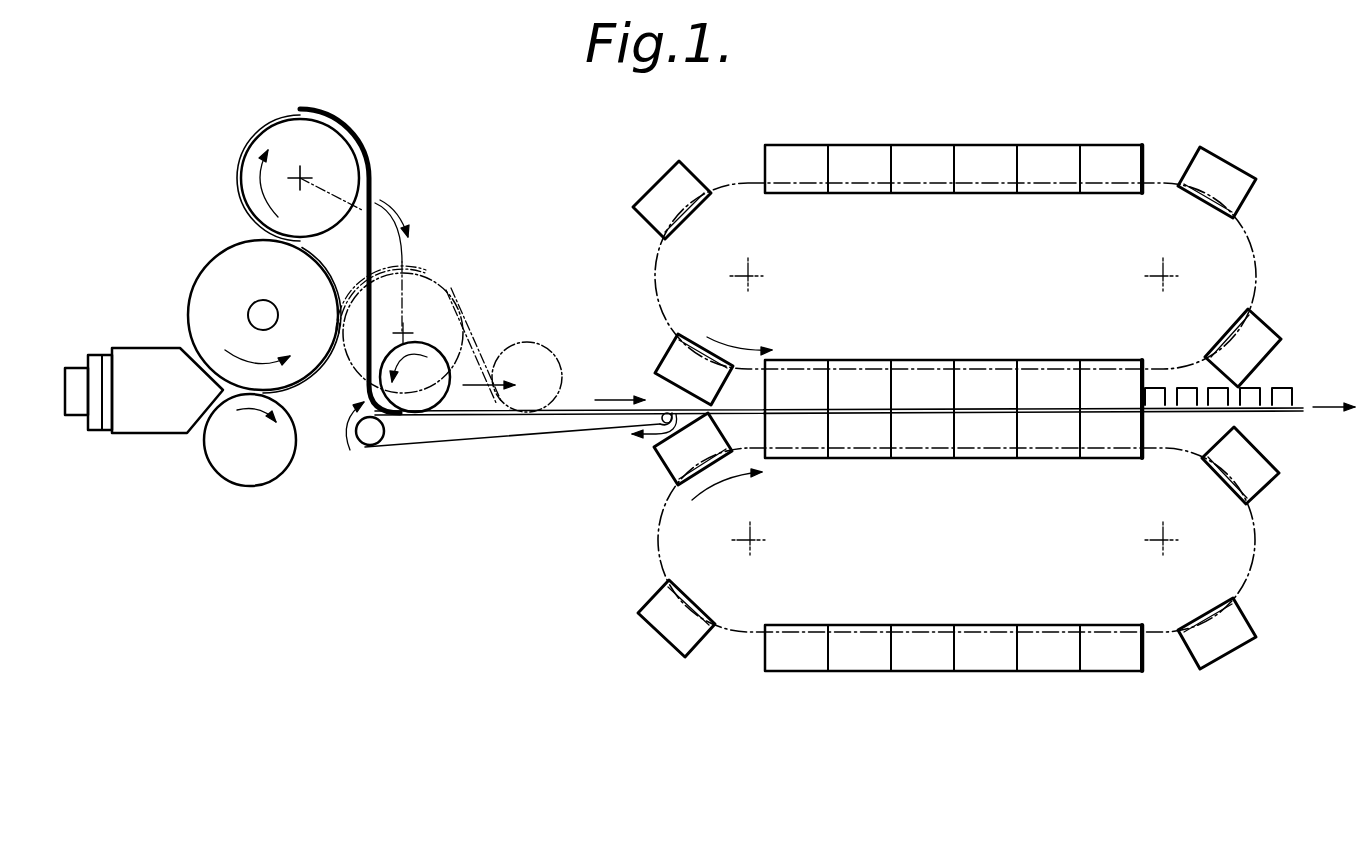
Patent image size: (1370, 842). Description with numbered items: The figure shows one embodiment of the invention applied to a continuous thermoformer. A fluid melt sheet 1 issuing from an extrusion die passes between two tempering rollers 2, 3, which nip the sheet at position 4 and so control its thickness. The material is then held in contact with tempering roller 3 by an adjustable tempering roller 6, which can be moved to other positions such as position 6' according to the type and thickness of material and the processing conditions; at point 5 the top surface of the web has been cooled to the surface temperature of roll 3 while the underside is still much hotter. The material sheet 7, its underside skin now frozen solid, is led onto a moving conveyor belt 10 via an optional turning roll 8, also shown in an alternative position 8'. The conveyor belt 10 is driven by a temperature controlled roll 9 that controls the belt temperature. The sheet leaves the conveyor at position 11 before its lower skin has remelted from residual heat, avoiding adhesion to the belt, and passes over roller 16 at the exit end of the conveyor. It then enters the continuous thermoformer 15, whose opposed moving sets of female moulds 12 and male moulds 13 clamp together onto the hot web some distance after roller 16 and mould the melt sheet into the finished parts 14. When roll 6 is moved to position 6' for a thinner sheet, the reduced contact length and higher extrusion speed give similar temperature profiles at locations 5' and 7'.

The fluid melt sheet 1 is at (228, 395).
The tempering roller 2 is at (238, 474).
The tempering roller 3 is at (205, 300).
The nip position 4 is at (278, 398).
The web location 5 is at (244, 178).
The adjustable tempering roller 6 is at (301, 149).
The material sheet 7 is at (354, 261).
The turning roll 8 is at (415, 420).
The temperature controlled roll 9 is at (367, 443).
The conveyor belt 10 is at (523, 418).
The conveyor exit position 11 is at (690, 420).
The female moulds 12 is at (807, 150).
The male moulds 13 is at (793, 657).
The finished parts 14 is at (1283, 393).
The continuous thermoformer 15 is at (720, 633).
The exit roller 16 is at (665, 411).
The web location for thinner sheet 5' is at (396, 276).
The alternative roller position 6' is at (416, 319).
The web location for thinner sheet 7' is at (488, 345).
The alternative turning roll position 8' is at (545, 357).